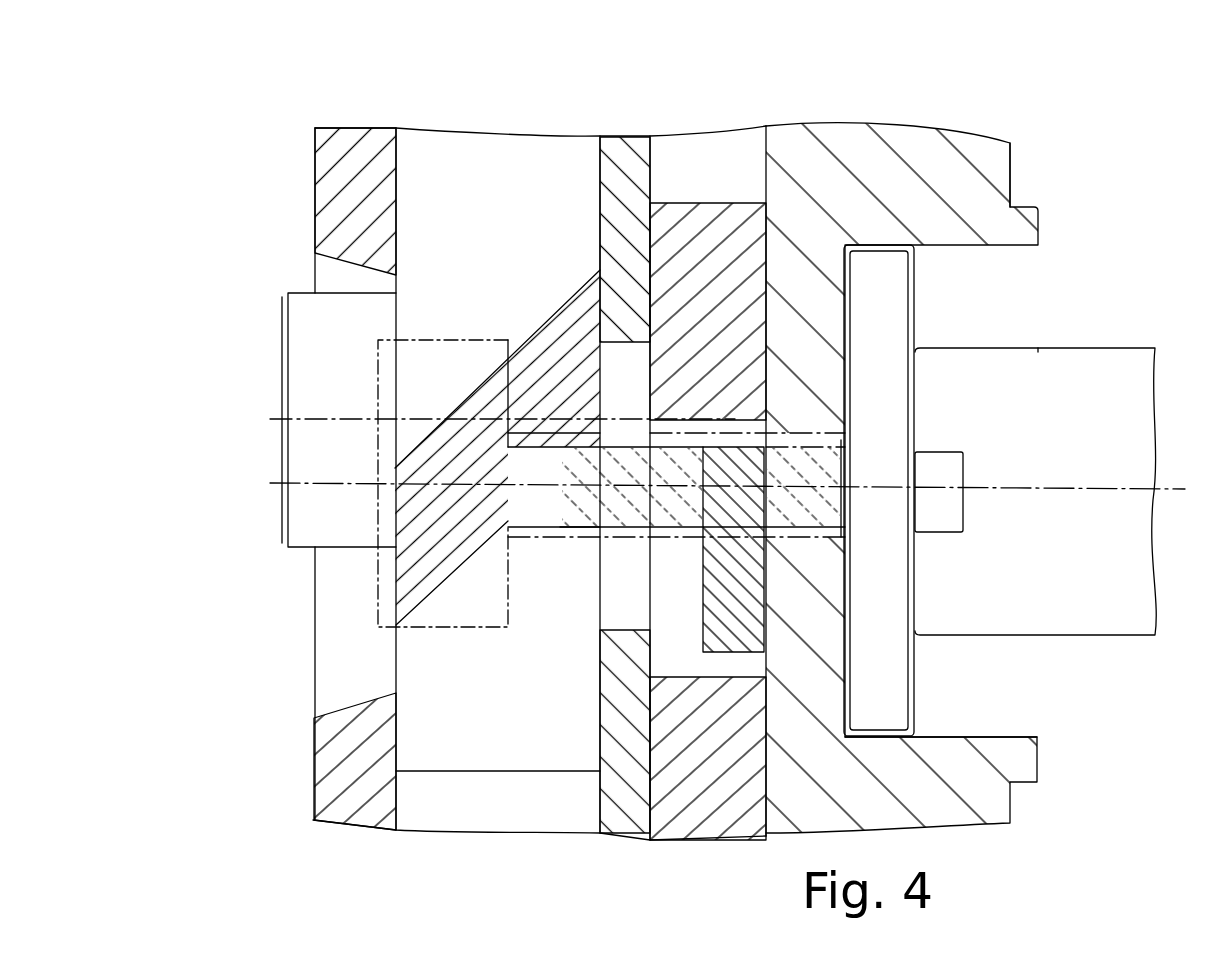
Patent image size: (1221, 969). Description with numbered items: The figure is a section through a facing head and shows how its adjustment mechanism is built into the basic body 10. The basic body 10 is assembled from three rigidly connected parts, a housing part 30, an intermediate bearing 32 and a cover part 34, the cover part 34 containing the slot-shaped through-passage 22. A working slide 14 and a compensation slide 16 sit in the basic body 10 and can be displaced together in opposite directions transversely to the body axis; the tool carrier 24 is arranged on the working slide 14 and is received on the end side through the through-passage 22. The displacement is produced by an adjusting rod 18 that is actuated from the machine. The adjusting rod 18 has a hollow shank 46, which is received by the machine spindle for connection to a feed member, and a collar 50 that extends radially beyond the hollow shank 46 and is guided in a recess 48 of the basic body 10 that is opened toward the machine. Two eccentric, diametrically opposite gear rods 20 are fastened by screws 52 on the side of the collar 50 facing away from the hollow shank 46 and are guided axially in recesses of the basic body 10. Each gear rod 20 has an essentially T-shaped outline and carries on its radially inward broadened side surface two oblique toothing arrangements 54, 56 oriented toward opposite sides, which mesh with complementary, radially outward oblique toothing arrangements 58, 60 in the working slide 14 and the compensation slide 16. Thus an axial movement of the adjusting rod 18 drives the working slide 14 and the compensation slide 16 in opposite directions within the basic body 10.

The basic body 10 is at (807, 185).
The working slide 14 is at (482, 180).
The compensation slide 16 is at (716, 248).
The adjusting rod 18 is at (1112, 403).
The gear rods 20 is at (453, 603).
The through-passage 22 is at (348, 692).
The tool carrier 24 is at (313, 507).
The housing part 30 is at (920, 192).
The intermediate bearing 32 is at (628, 172).
The cover part 34 is at (348, 213).
The hollow shank 46 is at (1046, 385).
The recess 48 is at (990, 727).
The collar 50 is at (884, 303).
The screws 52 is at (943, 480).
The oblique toothing arrangement 54 is at (455, 528).
The oblique toothing arrangement 56 is at (622, 520).
The oblique toothing arrangement 58 is at (556, 345).
The oblique toothing arrangement 60 is at (735, 580).